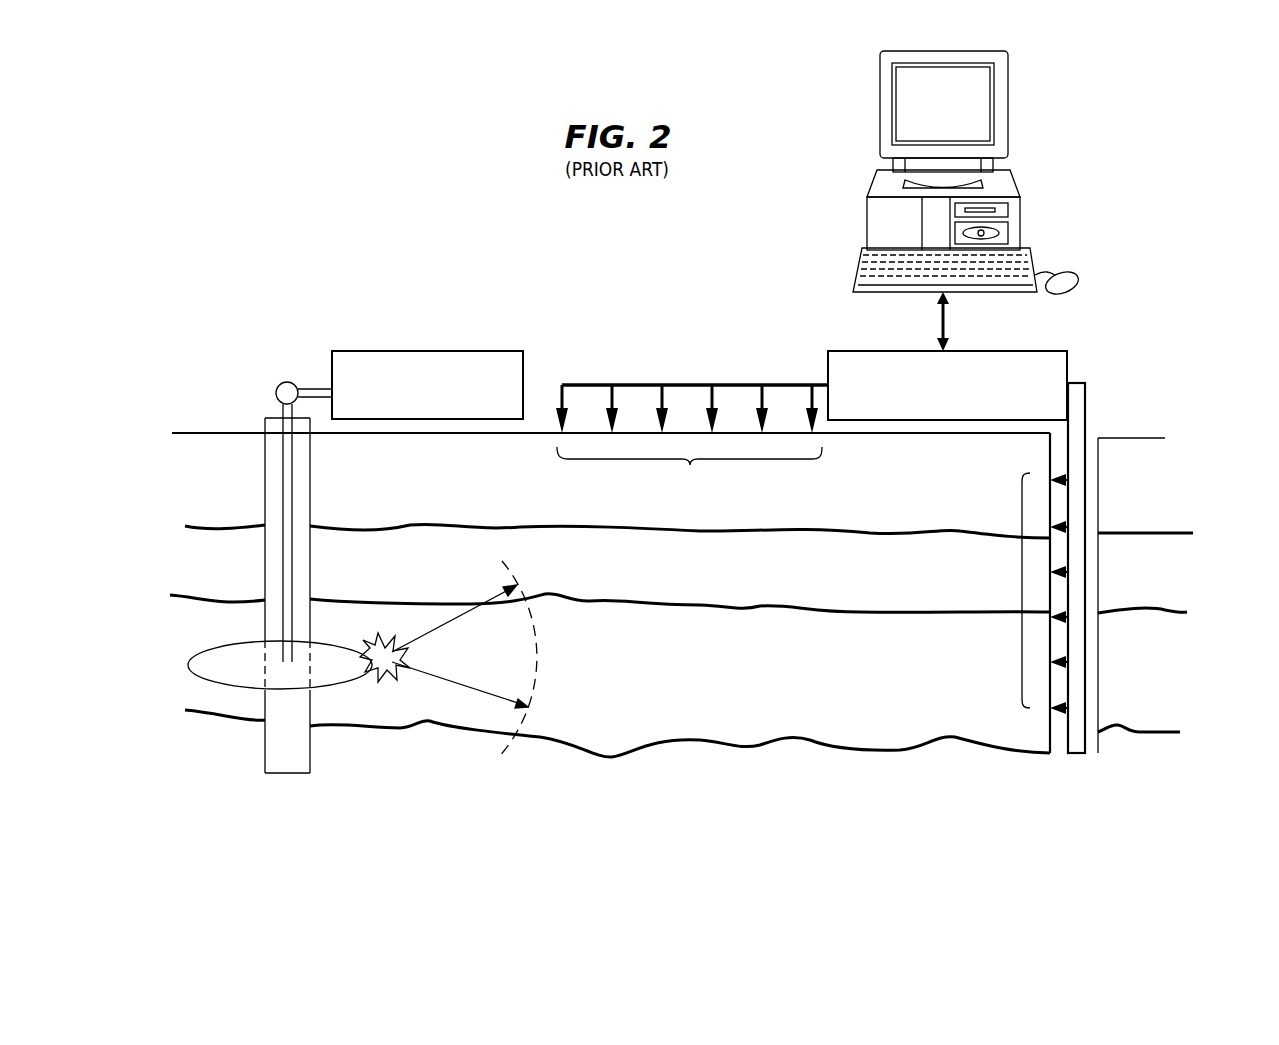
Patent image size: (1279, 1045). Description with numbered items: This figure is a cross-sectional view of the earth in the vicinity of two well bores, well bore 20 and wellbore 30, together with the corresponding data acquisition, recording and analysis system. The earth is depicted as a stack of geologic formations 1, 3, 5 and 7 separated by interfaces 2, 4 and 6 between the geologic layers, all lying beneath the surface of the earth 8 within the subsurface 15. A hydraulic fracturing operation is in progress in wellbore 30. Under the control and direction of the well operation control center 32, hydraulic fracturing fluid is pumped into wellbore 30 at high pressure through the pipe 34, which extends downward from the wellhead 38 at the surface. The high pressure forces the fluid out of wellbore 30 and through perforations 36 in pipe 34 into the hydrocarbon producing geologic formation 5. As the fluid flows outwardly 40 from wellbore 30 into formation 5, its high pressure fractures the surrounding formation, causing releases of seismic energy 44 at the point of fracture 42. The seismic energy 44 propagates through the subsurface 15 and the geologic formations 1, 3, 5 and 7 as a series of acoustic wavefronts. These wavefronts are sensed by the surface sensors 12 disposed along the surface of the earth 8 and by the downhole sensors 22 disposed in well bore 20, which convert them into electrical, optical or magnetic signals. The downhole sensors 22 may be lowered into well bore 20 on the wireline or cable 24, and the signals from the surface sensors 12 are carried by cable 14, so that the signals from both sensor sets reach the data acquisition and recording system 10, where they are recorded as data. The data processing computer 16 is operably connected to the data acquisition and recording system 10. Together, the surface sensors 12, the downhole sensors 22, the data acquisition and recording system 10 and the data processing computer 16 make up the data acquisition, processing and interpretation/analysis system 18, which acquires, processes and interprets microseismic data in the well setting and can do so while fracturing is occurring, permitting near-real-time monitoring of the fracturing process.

The geologic formation 1 is at (786, 509).
The interface 2 is at (897, 538).
The geologic formation 3 is at (786, 582).
The interface 4 is at (897, 612).
The hydrocarbon producing geologic formation 5 is at (788, 687).
The interface 6 is at (897, 753).
The geologic formation 7 is at (786, 812).
The surface of the earth 8 is at (190, 433).
The data acquisition and recording system 10 is at (1068, 355).
The surface sensors 12 is at (689, 471).
The cable 14 is at (690, 383).
The subsurface of the earth 15 is at (1210, 496).
The data processing computer 16 is at (1015, 180).
The data acquisition, processing and interpretation/analysis system 18 is at (1175, 178).
The well bore 20 is at (1098, 563).
The downhole sensors 22 is at (1022, 598).
The wireline or cable 24 is at (1090, 410).
The wellbore 30 is at (275, 477).
The well operation control center 32 is at (408, 350).
The pipe 34 is at (295, 482).
The perforations 36 is at (265, 655).
The wellhead 38 is at (265, 418).
The outward flow of fracturing fluid 40 is at (190, 667).
The point of fracture 42 is at (383, 690).
The seismic energy 44 is at (540, 657).